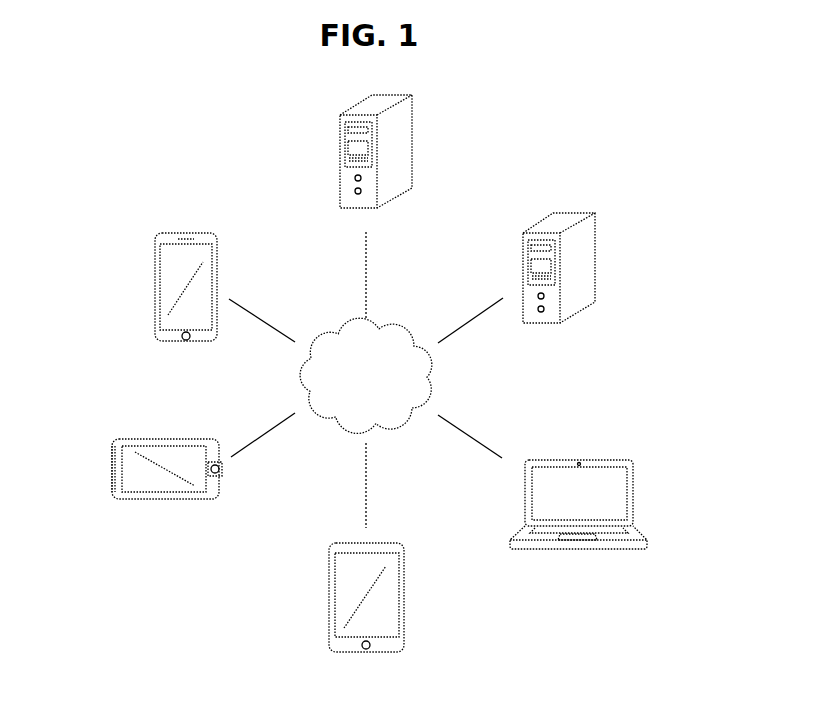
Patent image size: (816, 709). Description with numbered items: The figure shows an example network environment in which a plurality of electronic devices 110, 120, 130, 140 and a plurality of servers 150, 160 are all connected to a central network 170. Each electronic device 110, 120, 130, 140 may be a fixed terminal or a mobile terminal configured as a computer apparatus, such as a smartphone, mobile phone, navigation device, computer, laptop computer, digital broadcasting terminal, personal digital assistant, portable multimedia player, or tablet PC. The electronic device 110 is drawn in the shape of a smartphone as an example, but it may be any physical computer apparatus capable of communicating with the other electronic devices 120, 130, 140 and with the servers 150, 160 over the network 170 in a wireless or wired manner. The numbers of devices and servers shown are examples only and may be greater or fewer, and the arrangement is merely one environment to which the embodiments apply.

The electronic device 110 is at (155, 288).
The electronic device 120 is at (112, 468).
The electronic device 130 is at (404, 597).
The electronic device 140 is at (633, 495).
The server 150 is at (595, 255).
The server 160 is at (412, 140).
The network 170 is at (388, 332).